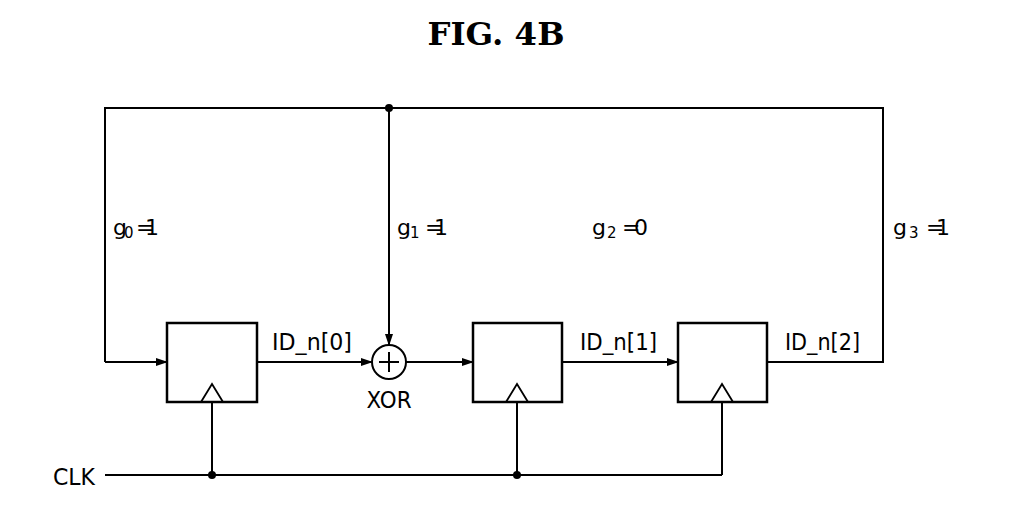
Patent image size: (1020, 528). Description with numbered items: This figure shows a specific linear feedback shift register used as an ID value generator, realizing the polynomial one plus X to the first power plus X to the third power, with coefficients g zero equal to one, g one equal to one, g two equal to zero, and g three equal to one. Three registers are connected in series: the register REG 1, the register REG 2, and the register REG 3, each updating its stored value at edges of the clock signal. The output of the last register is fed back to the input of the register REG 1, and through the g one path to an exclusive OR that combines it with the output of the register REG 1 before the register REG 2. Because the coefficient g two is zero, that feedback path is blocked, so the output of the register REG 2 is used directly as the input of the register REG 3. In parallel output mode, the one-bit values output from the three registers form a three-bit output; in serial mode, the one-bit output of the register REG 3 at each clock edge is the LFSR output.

The register REG1 1 is at (212, 362).
The register REG2 2 is at (517, 362).
The register REG3 3 is at (722, 362).